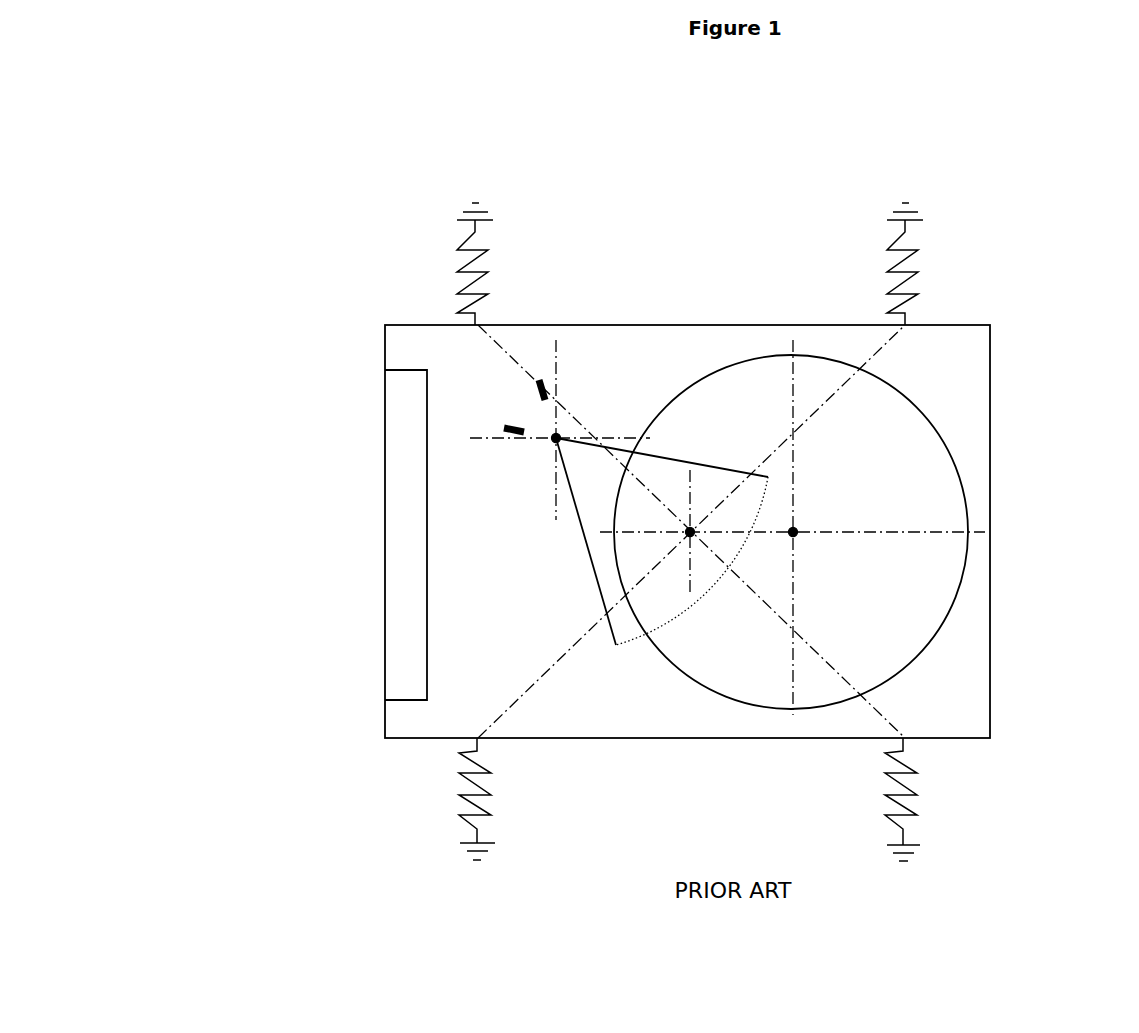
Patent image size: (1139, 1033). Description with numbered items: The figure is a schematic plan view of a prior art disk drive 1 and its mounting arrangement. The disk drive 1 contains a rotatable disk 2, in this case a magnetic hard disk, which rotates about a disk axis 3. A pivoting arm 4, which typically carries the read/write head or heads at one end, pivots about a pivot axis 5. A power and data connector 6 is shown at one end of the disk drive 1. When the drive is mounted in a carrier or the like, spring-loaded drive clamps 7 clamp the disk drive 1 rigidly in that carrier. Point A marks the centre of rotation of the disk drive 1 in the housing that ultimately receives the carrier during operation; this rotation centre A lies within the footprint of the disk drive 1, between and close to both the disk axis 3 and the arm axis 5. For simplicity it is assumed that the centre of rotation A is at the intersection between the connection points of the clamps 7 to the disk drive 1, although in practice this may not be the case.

The disk drive 1 is at (1004, 644).
The rotatable disk 2 is at (979, 573).
The disk axis 3 is at (812, 525).
The pivoting arm 4 is at (627, 438).
The pivot axis 5 is at (537, 446).
The power and data connector 6 is at (395, 661).
The spring-loaded drive clamps 7 is at (503, 262).
The centre of rotation A is at (684, 551).